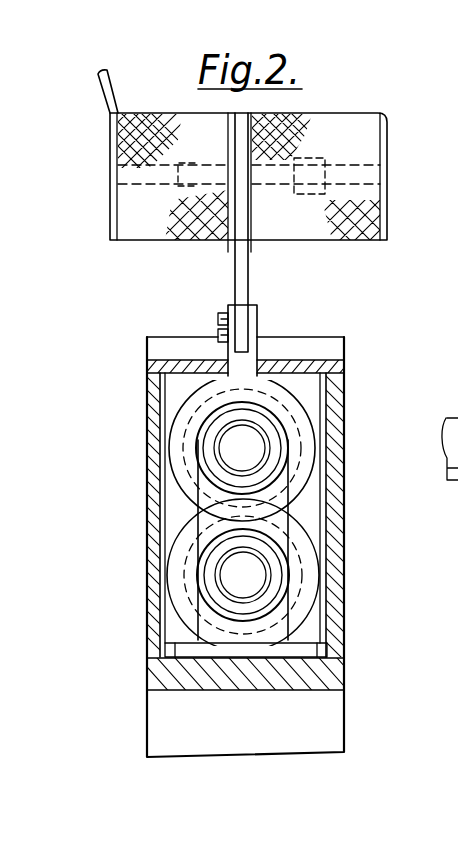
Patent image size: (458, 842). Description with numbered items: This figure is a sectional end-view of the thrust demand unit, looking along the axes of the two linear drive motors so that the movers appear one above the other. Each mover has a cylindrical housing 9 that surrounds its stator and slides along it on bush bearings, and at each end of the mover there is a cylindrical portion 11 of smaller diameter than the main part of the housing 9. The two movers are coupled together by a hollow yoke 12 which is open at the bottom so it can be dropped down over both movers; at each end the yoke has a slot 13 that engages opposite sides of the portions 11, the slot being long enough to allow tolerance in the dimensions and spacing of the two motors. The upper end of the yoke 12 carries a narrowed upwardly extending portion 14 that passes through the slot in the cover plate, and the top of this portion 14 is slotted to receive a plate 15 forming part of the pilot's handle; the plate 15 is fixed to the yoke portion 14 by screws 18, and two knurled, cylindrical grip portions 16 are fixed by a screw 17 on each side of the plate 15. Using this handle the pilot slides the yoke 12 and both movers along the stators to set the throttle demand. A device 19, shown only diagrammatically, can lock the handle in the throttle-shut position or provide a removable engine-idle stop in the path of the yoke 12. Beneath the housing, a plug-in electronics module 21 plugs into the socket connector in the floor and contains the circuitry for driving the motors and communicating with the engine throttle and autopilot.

The cylindrical housing 9 is at (222, 516).
The cylindrical portion 11 is at (220, 490).
The hollow yoke 12 is at (162, 462).
The slot 13 is at (288, 528).
The narrowed upwardly extending portion 14 is at (240, 364).
The plate 15 is at (247, 289).
The knurled cylindrical grip portions 16 is at (150, 240).
The screw 17 is at (395, 175).
The screws 18 is at (218, 321).
The device 19 is at (347, 346).
The plug-in electronics module 21 is at (347, 715).